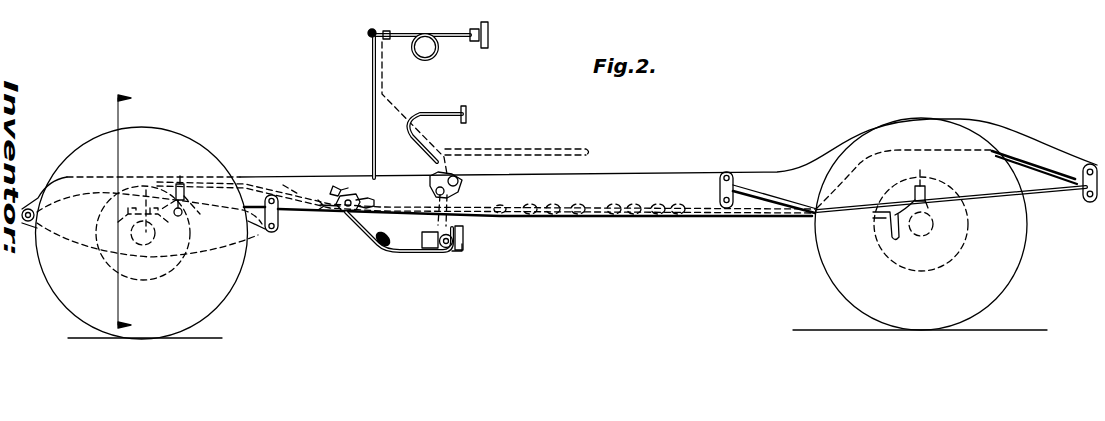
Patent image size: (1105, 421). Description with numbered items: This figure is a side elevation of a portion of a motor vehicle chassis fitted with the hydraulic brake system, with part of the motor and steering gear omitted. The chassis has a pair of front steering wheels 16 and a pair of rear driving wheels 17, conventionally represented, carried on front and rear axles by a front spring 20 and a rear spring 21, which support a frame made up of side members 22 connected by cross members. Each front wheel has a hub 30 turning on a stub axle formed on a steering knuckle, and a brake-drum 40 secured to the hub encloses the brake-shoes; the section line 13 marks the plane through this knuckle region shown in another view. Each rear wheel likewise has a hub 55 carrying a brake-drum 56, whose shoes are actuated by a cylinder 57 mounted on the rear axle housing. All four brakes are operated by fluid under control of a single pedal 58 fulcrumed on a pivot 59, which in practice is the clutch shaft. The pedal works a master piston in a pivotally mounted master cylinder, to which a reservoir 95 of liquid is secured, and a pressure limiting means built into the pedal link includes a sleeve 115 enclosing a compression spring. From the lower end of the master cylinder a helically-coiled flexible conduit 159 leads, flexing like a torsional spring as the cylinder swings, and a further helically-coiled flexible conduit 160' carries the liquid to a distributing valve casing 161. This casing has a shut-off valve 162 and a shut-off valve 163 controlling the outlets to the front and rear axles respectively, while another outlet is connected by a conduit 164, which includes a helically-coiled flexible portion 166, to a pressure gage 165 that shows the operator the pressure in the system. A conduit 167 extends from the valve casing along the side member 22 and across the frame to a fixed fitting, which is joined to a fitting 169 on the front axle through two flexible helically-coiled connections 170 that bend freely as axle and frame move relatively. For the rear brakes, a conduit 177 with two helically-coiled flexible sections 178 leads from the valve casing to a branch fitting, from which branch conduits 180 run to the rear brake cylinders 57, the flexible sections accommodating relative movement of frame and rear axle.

The section line 13 is at (139, 212).
The front steering wheels 16 is at (190, 143).
The rear driving wheels 17 is at (1025, 261).
The front spring 20 is at (258, 233).
The rear spring 21 is at (1042, 199).
The side member 22 is at (661, 165).
The hub 30 is at (98, 217).
The brake-drum 40 is at (177, 268).
The hub 55 is at (933, 225).
The brake-drum 56 is at (937, 269).
The cylinder 57 is at (928, 185).
The pedal 58 is at (470, 115).
The pivot 59 is at (422, 197).
The reservoir 95 is at (453, 222).
The sleeve 115 is at (418, 246).
The flexible conduit 159 is at (453, 251).
The helically-coiled flexible conduit 160' is at (394, 247).
The distributing valve casing 161 is at (338, 211).
The shut-off valve 162 is at (333, 185).
The shut-off valve 163 is at (362, 188).
The conduit 164 is at (372, 113).
The pressure gage 165 is at (488, 34).
The helically-coiled flexible portion 166 is at (439, 54).
The conduit 167 is at (283, 185).
The fitting 169 is at (146, 190).
The flexible helically-coiled connection 170 is at (194, 201).
The conduit 177 is at (496, 218).
The helically-coiled flexible section 178 is at (553, 214).
The branch conduit 180 is at (848, 219).